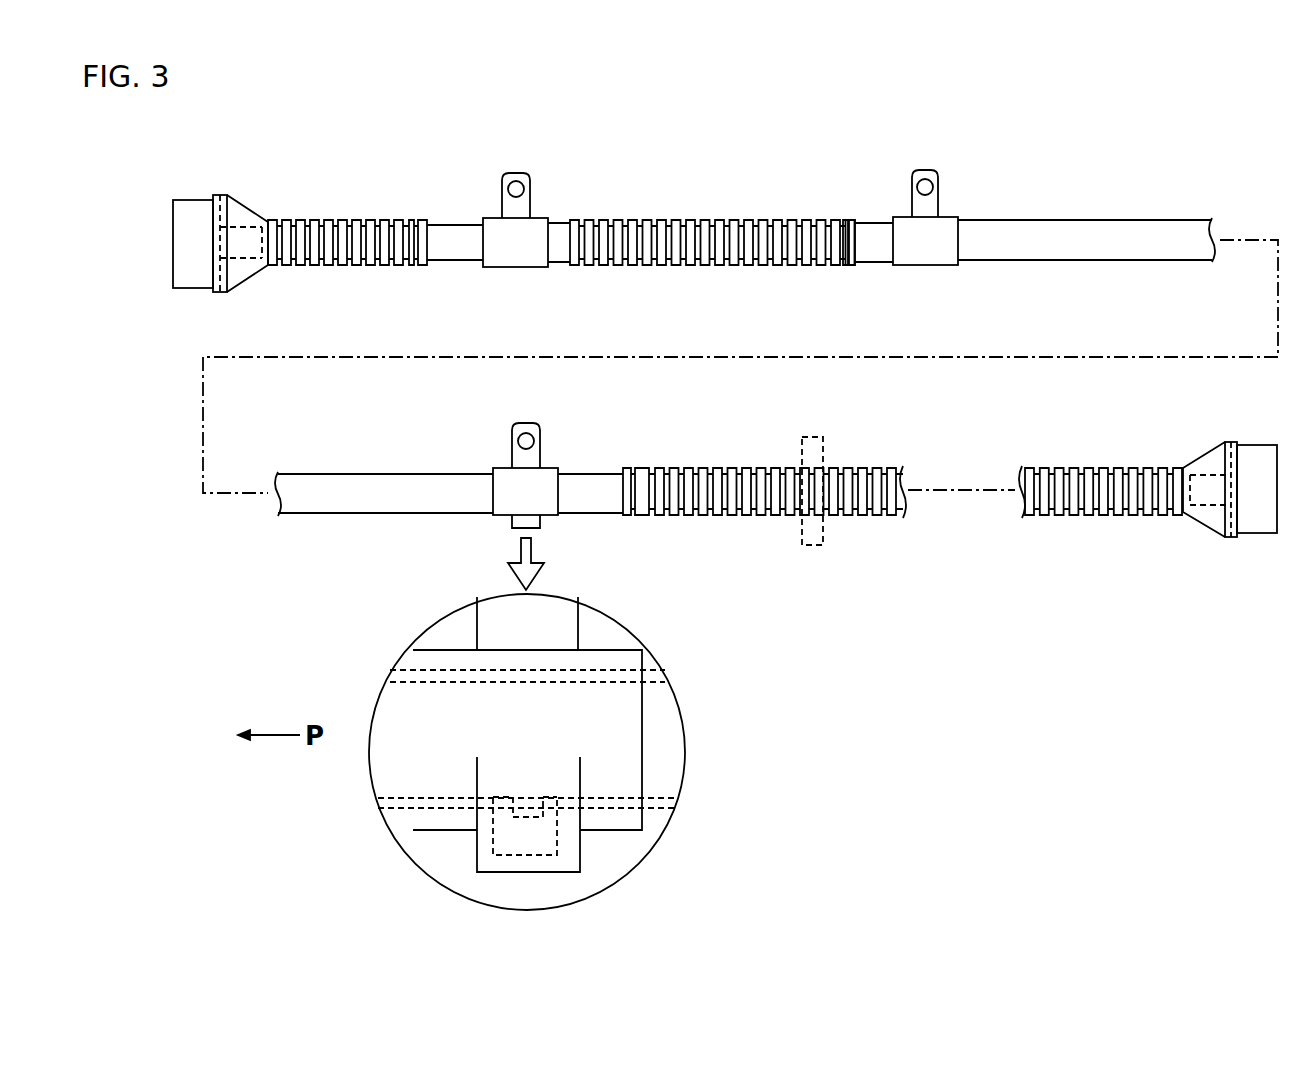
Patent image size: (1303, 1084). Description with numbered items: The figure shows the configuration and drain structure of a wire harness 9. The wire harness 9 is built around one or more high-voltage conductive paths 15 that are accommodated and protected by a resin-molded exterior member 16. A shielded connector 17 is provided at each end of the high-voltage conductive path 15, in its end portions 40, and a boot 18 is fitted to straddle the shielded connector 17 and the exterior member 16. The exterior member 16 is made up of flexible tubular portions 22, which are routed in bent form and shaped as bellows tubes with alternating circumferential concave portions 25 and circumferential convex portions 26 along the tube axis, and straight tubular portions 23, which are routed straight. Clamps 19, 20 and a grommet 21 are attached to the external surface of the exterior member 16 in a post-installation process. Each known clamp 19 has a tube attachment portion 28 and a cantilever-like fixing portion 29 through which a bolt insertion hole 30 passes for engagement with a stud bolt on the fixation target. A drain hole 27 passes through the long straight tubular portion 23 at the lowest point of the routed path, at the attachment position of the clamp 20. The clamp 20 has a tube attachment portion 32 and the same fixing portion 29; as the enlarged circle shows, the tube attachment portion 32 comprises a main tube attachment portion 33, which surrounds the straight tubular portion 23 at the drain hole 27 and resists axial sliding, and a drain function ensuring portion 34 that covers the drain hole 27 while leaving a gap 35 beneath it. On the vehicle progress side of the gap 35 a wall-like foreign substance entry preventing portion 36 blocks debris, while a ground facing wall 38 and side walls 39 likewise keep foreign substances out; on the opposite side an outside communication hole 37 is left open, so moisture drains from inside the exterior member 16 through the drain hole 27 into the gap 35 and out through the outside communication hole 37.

The wire harness 9 is at (1080, 198).
The high-voltage conductive path 15 is at (1190, 238).
The exterior member 16 is at (1164, 236).
The shielded connector 17 is at (205, 288).
The boot 18 is at (235, 205).
The clamp 19 is at (533, 235).
The clamp 20 is at (543, 488).
The grommet 21 is at (820, 437).
The flexible tubular portion 22 is at (362, 220).
The straight tubular portion 23 is at (466, 260).
The circumferential concave portion 25 is at (412, 265).
The circumferential convex portion 26 is at (428, 265).
The drain hole 27 is at (523, 510).
The tube attachment portion 28 is at (938, 245).
The fixing portion 29 is at (938, 192).
The bolt insertion hole 30 is at (515, 173).
The tube attachment portion 32 is at (622, 712).
The main tube attachment portion 33 is at (620, 757).
The drain function ensuring portion 34 is at (490, 863).
The gap 35 is at (545, 800).
The foreign substance entry preventing portion 36 is at (493, 838).
The outside communication hole 37 is at (580, 843).
The ground facing wall 38 is at (530, 810).
The side wall 39 is at (568, 820).
The end portion 40 is at (238, 245).